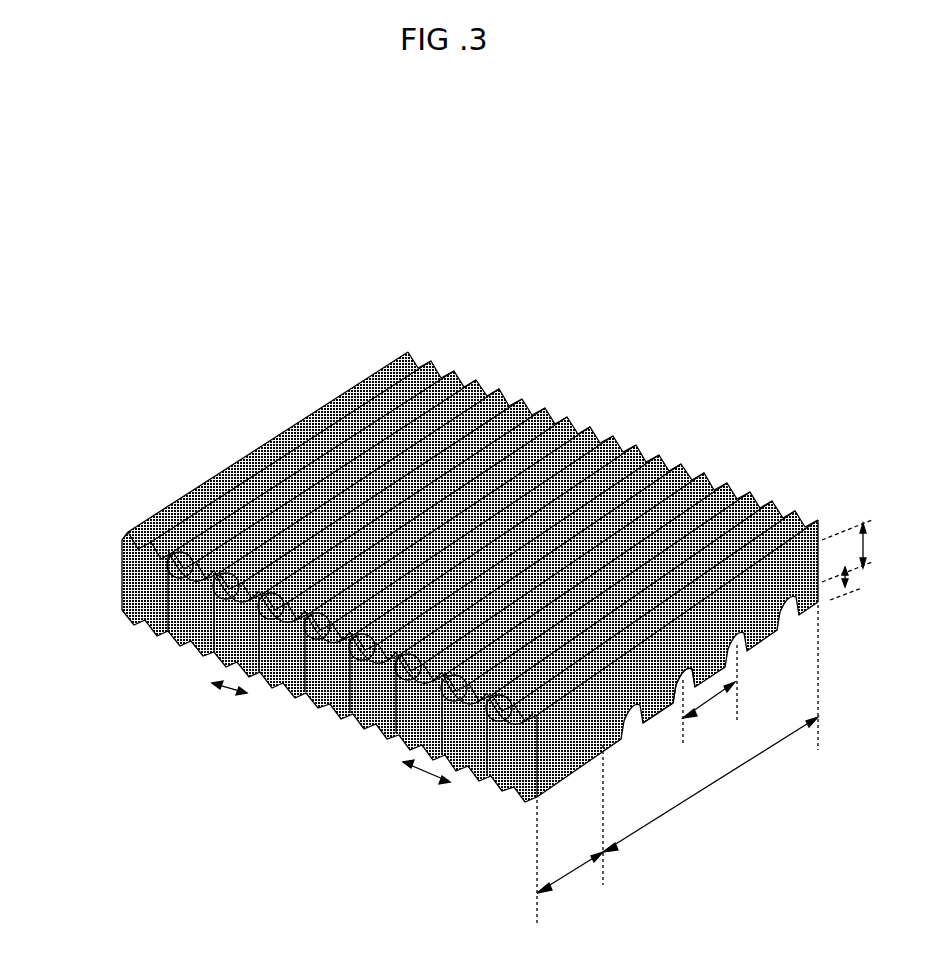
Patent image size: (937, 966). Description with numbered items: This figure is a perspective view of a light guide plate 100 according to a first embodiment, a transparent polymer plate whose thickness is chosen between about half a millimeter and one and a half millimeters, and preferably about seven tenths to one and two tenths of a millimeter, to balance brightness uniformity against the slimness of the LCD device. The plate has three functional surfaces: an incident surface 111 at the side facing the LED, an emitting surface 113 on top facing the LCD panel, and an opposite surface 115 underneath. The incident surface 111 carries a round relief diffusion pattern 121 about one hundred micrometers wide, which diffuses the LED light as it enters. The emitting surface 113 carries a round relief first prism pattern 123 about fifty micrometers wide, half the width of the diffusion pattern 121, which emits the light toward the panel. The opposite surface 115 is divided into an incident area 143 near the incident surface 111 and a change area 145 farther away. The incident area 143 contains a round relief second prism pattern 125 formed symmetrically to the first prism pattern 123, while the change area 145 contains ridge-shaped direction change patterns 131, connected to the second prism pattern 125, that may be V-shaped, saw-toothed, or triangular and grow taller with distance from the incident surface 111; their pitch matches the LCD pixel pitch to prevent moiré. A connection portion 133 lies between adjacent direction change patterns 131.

The light guide plate 100 is at (658, 327).
The incident surface 111 is at (120, 571).
The emitting surface 113 is at (300, 406).
The opposite surface 115 is at (796, 627).
The diffusion pattern 121 is at (124, 614).
The first prism pattern 123 is at (172, 503).
The second prism pattern 125 is at (497, 790).
The direction change pattern 131 is at (685, 690).
The connection portion 133 is at (648, 715).
The incident area 143 is at (570, 862).
The change area 145 is at (710, 745).